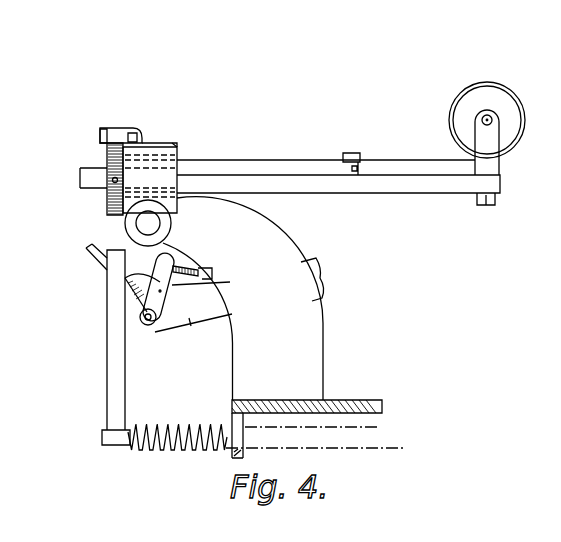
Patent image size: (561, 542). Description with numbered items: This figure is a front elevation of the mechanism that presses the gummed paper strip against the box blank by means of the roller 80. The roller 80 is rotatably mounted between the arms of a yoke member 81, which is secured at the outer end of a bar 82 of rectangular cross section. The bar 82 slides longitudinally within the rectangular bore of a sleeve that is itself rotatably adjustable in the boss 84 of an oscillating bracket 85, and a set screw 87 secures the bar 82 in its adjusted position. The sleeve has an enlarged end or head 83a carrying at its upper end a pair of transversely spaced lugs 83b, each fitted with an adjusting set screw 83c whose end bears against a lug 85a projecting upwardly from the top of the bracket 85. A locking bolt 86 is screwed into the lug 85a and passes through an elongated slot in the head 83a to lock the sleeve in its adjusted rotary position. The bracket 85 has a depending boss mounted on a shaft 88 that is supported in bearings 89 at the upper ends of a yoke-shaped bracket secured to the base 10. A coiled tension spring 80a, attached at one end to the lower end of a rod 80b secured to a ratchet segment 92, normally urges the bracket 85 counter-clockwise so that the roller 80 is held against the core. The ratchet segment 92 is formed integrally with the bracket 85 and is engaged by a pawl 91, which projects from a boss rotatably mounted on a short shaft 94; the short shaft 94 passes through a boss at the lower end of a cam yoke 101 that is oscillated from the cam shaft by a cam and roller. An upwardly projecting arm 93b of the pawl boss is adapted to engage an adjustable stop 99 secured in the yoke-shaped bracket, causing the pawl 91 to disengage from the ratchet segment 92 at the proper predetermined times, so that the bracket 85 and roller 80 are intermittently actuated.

The base 10 is at (383, 405).
The roller 80 is at (509, 92).
The coiled tension spring 80a is at (153, 451).
The rod 80b is at (112, 367).
The yoke member 81 is at (493, 160).
The bar 82 is at (493, 186).
The enlarged end or head 83a is at (112, 152).
The lugs 83b is at (117, 130).
The adjusting set screw 83c is at (132, 131).
The boss 84 is at (173, 143).
The oscillating bracket 85 is at (173, 163).
The lug 85a is at (143, 130).
The locking bolt 86 is at (101, 130).
The set screw 87 is at (112, 187).
The shaft 88 is at (140, 224).
The bearings 89 is at (128, 227).
The pawl 91 is at (133, 295).
The ratchet segment 92 is at (97, 258).
The arm 93b is at (160, 291).
The short shaft 94 is at (148, 326).
The adjustable stop 99 is at (202, 267).
The cam yoke 101 is at (189, 322).